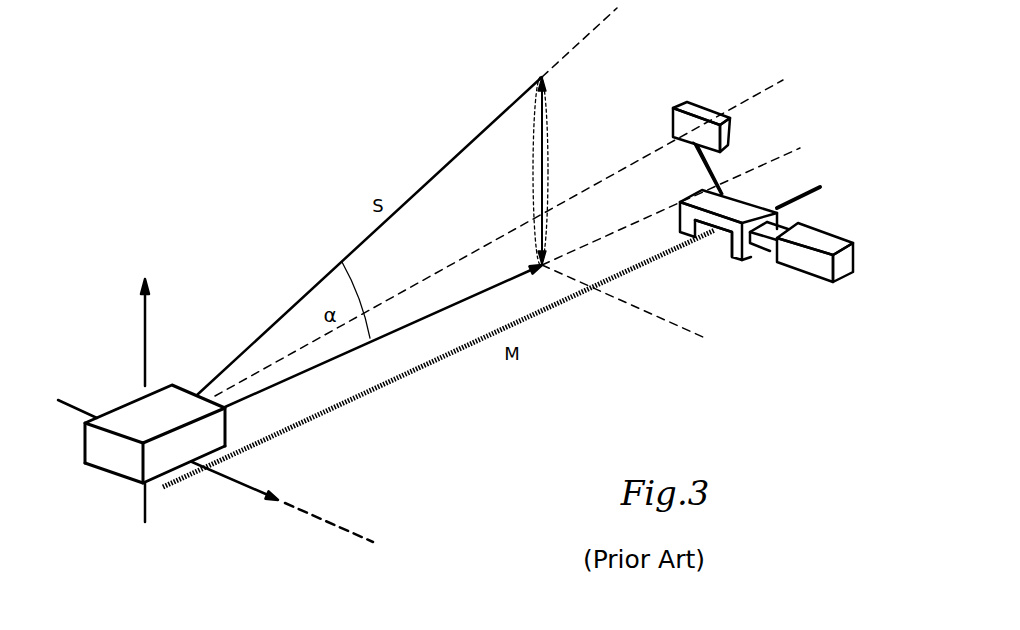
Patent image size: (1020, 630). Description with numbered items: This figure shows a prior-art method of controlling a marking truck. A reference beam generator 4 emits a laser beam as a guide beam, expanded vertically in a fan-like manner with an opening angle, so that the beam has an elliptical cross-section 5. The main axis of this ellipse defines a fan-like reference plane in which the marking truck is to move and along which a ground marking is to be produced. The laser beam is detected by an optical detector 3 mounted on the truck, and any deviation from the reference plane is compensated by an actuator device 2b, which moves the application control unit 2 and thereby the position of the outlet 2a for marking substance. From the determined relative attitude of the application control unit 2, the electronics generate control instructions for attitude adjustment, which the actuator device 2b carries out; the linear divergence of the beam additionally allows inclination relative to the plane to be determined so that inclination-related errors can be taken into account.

The application control unit 2 is at (748, 251).
The outlet for marking substance 2a is at (763, 291).
The actuator device 2b is at (788, 164).
The optical detector 3 is at (670, 126).
The reference beam generator 4 is at (219, 435).
The elliptical cross-section 5 is at (504, 171).